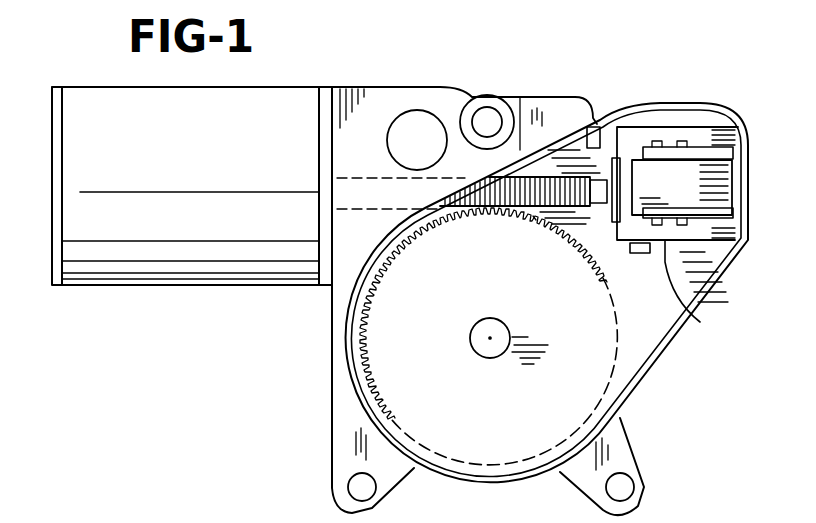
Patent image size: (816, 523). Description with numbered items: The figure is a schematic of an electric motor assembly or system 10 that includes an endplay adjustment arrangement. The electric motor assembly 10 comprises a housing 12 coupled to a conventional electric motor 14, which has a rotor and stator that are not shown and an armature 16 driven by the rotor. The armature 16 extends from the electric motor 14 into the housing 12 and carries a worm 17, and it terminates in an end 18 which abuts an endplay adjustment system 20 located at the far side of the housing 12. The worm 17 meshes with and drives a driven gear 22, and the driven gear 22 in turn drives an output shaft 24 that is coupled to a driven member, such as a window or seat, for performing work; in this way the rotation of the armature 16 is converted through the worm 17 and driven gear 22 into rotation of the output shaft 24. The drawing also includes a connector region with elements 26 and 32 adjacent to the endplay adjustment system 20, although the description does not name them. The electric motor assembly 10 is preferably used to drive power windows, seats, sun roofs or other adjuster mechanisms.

The electric motor assembly 10 is at (103, 80).
The housing 12 is at (377, 85).
The electric motor 14 is at (270, 100).
The armature 16 is at (524, 168).
The worm 17 is at (533, 216).
The end 18 is at (599, 172).
The endplay adjustment system 20 is at (713, 182).
The driven gear 22 is at (616, 366).
The output shaft 24 is at (484, 325).
The connector housing 26 is at (656, 126).
The electrical connector 32 is at (670, 170).